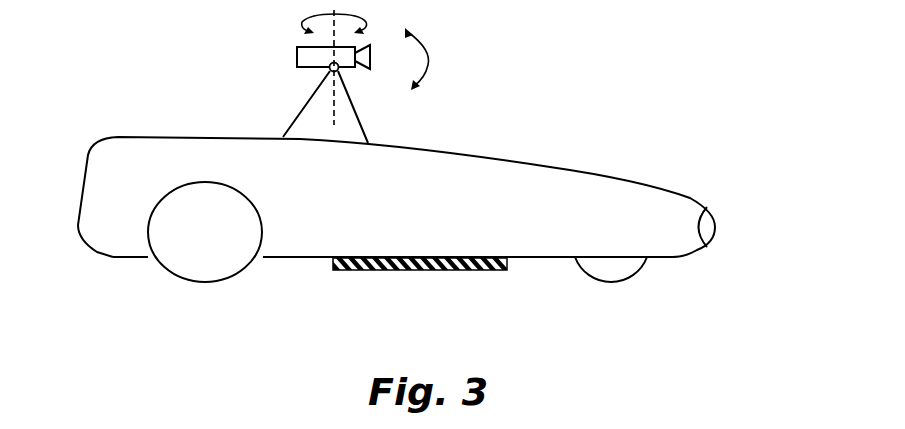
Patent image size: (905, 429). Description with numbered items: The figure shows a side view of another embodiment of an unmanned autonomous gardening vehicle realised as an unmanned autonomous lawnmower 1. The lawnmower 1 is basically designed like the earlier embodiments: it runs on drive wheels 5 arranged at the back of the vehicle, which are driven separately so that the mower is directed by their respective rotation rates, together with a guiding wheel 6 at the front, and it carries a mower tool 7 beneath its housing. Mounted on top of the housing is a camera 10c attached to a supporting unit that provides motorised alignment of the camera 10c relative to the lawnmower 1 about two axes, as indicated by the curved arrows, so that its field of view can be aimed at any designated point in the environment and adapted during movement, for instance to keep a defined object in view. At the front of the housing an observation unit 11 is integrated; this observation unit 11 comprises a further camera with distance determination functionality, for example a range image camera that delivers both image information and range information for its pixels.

The lawnmower 1 is at (108, 68).
The camera 10c is at (310, 56).
The drive wheels 5 is at (180, 257).
The guiding wheel 6 is at (618, 273).
The mower tool 7 is at (418, 270).
The observation unit 11 is at (710, 227).